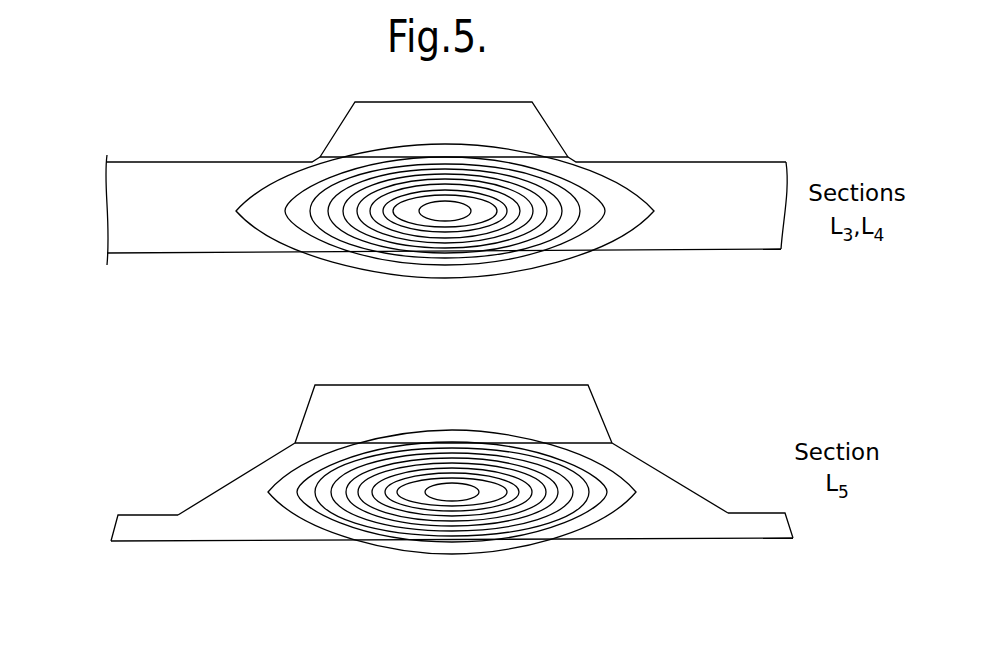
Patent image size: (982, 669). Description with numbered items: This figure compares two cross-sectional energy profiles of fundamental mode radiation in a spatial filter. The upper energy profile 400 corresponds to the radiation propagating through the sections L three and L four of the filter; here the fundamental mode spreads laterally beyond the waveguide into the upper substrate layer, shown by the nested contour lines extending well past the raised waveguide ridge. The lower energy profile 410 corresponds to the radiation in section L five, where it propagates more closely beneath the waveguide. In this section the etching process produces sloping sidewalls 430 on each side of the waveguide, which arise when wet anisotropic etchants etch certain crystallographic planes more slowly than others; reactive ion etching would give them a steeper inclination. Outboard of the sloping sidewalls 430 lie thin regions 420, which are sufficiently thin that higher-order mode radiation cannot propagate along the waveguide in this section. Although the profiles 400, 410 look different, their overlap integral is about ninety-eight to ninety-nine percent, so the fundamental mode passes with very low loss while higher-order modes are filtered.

The energy profile 400 is at (750, 45).
The energy profile 410 is at (768, 407).
The regions 420 is at (142, 527).
The sloping sidewalls 430 is at (247, 472).